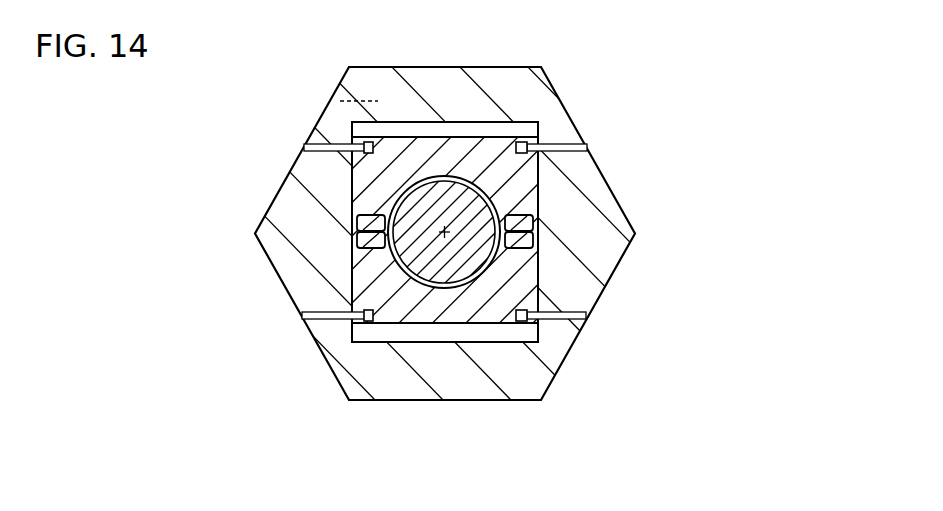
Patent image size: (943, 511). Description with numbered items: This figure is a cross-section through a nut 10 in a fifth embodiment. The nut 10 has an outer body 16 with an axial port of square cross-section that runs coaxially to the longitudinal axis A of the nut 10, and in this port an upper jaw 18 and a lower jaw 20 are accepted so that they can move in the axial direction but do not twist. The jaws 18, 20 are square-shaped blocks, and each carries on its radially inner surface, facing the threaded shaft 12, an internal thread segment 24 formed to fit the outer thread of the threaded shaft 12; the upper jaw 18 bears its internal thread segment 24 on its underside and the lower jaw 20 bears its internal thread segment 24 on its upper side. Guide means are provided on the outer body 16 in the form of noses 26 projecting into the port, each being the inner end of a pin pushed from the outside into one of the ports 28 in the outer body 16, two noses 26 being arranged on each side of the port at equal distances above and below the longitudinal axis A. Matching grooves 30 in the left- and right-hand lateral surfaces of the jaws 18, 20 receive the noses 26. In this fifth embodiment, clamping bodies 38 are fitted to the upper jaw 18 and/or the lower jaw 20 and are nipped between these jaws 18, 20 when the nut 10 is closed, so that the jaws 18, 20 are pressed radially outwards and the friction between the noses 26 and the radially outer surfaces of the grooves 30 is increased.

The nut 10 is at (559, 88).
The threaded shaft 12 is at (399, 203).
The outer body 16 is at (636, 232).
The upper jaw 18 is at (407, 133).
The lower jaw 20 is at (405, 325).
The internal thread segment 24 is at (441, 287).
The noses 26 is at (522, 312).
The ports 28 is at (585, 153).
The grooves 30 is at (365, 329).
The clamping bodies 38 is at (358, 219).
The longitudinal axis A is at (447, 237).